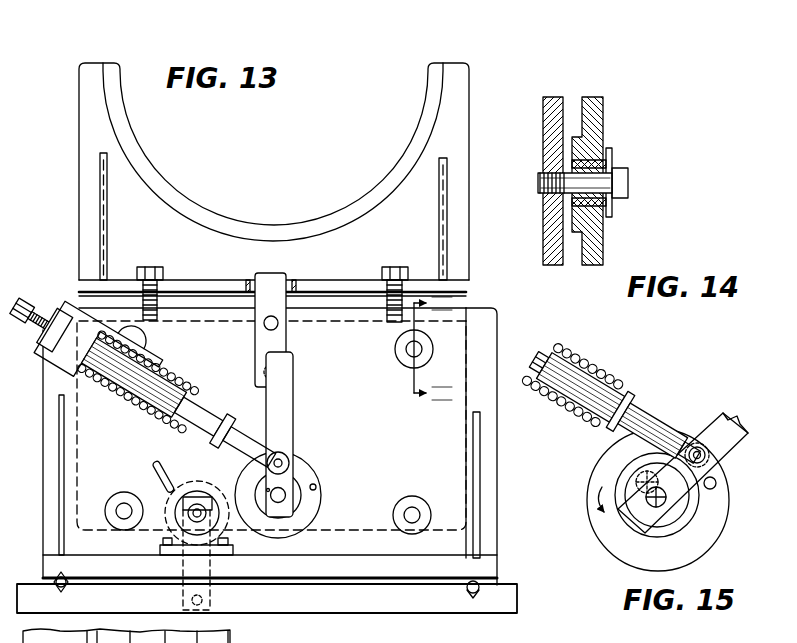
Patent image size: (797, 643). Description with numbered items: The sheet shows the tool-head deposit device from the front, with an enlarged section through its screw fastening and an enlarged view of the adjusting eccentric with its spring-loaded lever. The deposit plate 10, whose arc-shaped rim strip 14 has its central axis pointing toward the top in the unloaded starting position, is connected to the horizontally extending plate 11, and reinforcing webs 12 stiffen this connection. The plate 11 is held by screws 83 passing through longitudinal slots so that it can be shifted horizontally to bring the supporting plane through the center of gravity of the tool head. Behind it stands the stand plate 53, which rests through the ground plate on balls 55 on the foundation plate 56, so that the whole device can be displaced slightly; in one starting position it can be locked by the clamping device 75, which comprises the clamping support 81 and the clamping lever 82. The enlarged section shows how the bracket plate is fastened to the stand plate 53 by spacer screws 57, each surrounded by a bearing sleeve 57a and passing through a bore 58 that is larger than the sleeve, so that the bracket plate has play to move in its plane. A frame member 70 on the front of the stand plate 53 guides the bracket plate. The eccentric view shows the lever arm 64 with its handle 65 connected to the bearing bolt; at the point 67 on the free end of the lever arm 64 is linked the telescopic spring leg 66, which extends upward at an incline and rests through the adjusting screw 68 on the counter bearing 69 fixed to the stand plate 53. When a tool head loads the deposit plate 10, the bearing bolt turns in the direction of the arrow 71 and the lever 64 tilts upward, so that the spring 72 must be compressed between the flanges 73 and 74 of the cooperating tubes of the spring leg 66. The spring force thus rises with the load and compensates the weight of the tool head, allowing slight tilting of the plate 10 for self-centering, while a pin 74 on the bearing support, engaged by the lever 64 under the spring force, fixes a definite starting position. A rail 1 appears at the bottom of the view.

In FIG. 13, the support rail 1 is at (90, 642).
In FIG. 13, the deposit plate 10 is at (460, 177).
In FIG. 13, the horizontally extending plate 11 is at (192, 288).
In FIG. 13, the reinforcing webs 12 is at (100, 195).
In FIG. 13, the arc-shaped rim strip 14 is at (256, 227).
In FIG. 13, the stand plate 53 is at (487, 322).
In FIG. 13, the balls 55 is at (62, 577).
In FIG. 13, the foundation plate 56 is at (505, 598).
In FIG. 13, the spacer screws 57 is at (122, 495).
In FIG. 14, the spacer screws 57 is at (628, 185).
In FIG. 14, the bearing sleeves 57a is at (612, 152).
In FIG. 14, the bores 58 is at (592, 166).
In FIG. 15, the lever arm 64 is at (698, 478).
In FIG. 15, the handle 65 is at (713, 427).
In FIG. 13, the telescopic spring leg 66 is at (190, 364).
In FIG. 15, the telescopic spring leg 66 is at (572, 342).
In FIG. 13, the link point 67 is at (288, 455).
In FIG. 15, the link point 67 is at (696, 443).
In FIG. 13, the adjusting screw 68 is at (32, 320).
In FIG. 13, the counter bearing 69 is at (62, 284).
In FIG. 13, the frame member 70 is at (282, 338).
In FIG. 15, the arrow 71 is at (608, 488).
In FIG. 13, the spring 72 is at (100, 378).
In FIG. 15, the spring 72 is at (590, 365).
In FIG. 13, the flange 73 is at (232, 408).
In FIG. 15, the flange 73 is at (635, 392).
In FIG. 13, the flange / pin 74 is at (316, 487).
In FIG. 15, the flange / pin 74 is at (716, 488).
In FIG. 13, the clamping device 75 is at (200, 483).
In FIG. 13, the clamping support 81 is at (180, 540).
In FIG. 13, the clamping lever 82 is at (157, 460).
In FIG. 13, the screws 83 is at (135, 275).